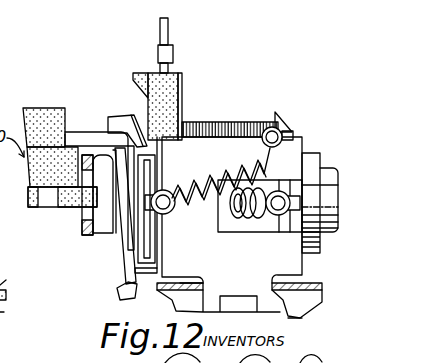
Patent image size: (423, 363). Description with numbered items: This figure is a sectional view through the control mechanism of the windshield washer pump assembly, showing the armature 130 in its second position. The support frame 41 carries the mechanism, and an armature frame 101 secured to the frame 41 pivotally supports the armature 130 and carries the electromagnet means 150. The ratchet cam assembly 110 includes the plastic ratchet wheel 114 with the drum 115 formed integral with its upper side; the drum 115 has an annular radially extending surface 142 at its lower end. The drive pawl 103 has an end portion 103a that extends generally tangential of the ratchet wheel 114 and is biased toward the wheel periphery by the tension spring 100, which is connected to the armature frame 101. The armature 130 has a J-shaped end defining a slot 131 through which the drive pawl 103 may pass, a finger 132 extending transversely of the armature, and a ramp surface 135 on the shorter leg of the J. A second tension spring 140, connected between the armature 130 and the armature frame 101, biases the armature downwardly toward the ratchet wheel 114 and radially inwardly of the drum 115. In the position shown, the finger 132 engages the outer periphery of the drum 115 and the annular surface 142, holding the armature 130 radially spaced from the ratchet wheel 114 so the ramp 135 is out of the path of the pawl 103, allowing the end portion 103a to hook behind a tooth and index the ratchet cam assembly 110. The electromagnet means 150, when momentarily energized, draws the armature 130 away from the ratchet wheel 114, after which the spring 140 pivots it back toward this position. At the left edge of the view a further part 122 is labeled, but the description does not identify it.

The drum 115 is at (35, 120).
The ratchet wheel 114 is at (50, 206).
The block 122 is at (8, 259).
The ratchet cam assembly 110 is at (10, 270).
The finger 132 is at (95, 131).
The annular radially extending surface 142 is at (73, 131).
The armature 130 is at (118, 110).
The electromagnet means 150 is at (200, 104).
The end portion 103a is at (88, 236).
The drive pawl 103 is at (107, 183).
The slot 131 is at (122, 253).
The ramp surface 135 is at (118, 293).
The tension spring 100 is at (268, 178).
The armature frame 101 is at (240, 273).
The support frame 41 is at (177, 291).
The tension spring 140 is at (220, 136).